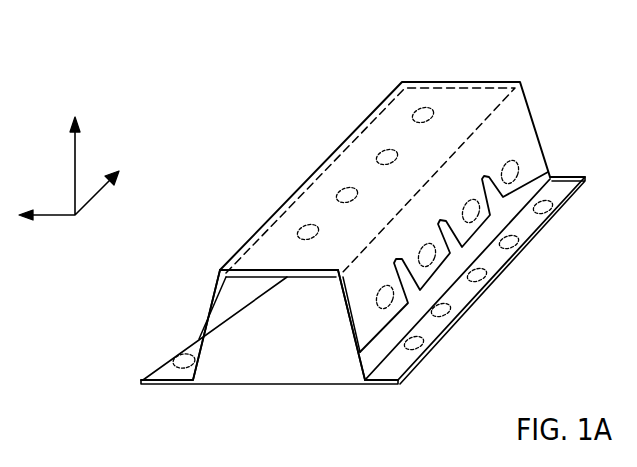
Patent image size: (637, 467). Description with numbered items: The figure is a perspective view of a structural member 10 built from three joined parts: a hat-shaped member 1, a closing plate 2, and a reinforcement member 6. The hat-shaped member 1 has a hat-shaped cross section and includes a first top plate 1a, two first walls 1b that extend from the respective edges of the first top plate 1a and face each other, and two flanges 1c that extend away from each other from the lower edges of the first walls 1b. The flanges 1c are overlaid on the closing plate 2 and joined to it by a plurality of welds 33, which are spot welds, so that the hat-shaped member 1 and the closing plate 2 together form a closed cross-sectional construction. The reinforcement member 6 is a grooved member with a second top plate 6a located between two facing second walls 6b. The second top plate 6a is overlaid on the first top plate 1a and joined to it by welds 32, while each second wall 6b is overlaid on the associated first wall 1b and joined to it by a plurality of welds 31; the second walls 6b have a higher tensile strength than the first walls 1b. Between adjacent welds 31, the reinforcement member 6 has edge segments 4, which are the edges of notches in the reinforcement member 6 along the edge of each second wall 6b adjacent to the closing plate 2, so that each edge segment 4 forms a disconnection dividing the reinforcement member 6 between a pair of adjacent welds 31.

The structural member 10 is at (43, 49).
The hat-shaped member 1 is at (147, 364).
The first top plate 1a is at (294, 278).
The first wall 1b is at (218, 316).
The flange 1c is at (172, 357).
The closing plate 2 is at (155, 401).
The edge segment 4 is at (493, 185).
The reinforcement member 6 is at (330, 148).
The second top plate 6a is at (273, 250).
The second wall 6b is at (207, 296).
The weld 31 is at (513, 167).
The weld 32 is at (430, 110).
The weld 33 is at (441, 310).